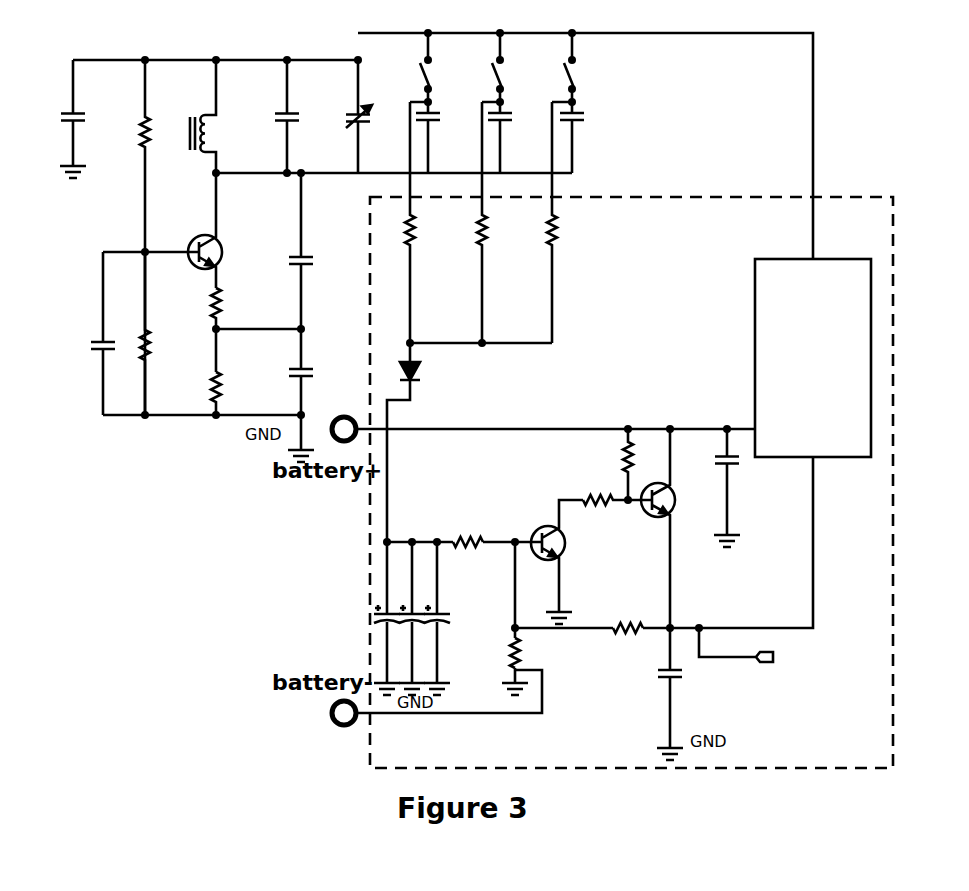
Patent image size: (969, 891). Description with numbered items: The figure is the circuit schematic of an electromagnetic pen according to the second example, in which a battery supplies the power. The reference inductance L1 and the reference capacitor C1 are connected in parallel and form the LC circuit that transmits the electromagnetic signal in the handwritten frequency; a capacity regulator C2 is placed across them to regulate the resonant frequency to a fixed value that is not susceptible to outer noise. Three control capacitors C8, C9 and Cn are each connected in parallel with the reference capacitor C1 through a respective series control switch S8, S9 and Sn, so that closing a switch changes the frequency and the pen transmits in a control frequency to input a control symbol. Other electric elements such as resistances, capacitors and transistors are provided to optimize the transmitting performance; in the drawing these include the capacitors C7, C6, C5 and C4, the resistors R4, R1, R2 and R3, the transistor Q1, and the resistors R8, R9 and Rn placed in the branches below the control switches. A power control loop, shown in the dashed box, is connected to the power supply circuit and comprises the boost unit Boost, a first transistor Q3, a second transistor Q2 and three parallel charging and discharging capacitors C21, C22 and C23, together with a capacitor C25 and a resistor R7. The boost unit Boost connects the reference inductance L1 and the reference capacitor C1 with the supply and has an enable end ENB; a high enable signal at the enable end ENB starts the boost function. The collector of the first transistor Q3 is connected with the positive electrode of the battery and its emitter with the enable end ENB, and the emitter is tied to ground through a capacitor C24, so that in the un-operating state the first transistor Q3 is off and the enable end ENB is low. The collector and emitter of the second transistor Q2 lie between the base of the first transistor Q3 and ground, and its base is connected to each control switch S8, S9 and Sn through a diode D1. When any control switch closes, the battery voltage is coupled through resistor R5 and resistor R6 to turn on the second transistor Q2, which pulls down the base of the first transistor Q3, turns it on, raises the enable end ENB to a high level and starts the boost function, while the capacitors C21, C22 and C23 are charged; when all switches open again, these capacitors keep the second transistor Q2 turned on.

The capacitor C7 is at (94, 119).
The resistor R4 is at (131, 237).
The reference inductance L1 is at (214, 116).
The reference capacitor C1 is at (298, 116).
The capacity regulator C2 is at (372, 116).
The control switch S8 is at (441, 69).
The control capacitor C8 is at (441, 137).
The control switch S9 is at (512, 69).
The control capacitor C9 is at (513, 137).
The control switch Sn is at (584, 69).
The control capacitor Cn is at (585, 137).
The resistor R8 is at (395, 222).
The resistor R9 is at (468, 222).
The resistor Rn is at (536, 222).
The diode D1 is at (417, 386).
The transistor Q1 is at (213, 230).
The resistor R1 is at (227, 330).
The resistor R2 is at (227, 393).
The resistor R3 is at (156, 333).
The capacitor C6 is at (87, 333).
The capacitor C5 is at (314, 251).
The capacitor C4 is at (313, 395).
The charging and discharging capacitor C21 is at (367, 618).
The charging and discharging capacitor C22 is at (408, 618).
The charging and discharging capacitor C23 is at (453, 618).
The second transistor Q2 is at (555, 562).
The resistor R6 is at (605, 491).
The resistor R5 is at (616, 464).
The first transistor Q3 is at (668, 528).
The capacitor C25 is at (742, 488).
The resistor R7 is at (628, 619).
The capacitor C24 is at (651, 694).
The enable end ENB is at (757, 648).
The boost unit Boost is at (813, 358).